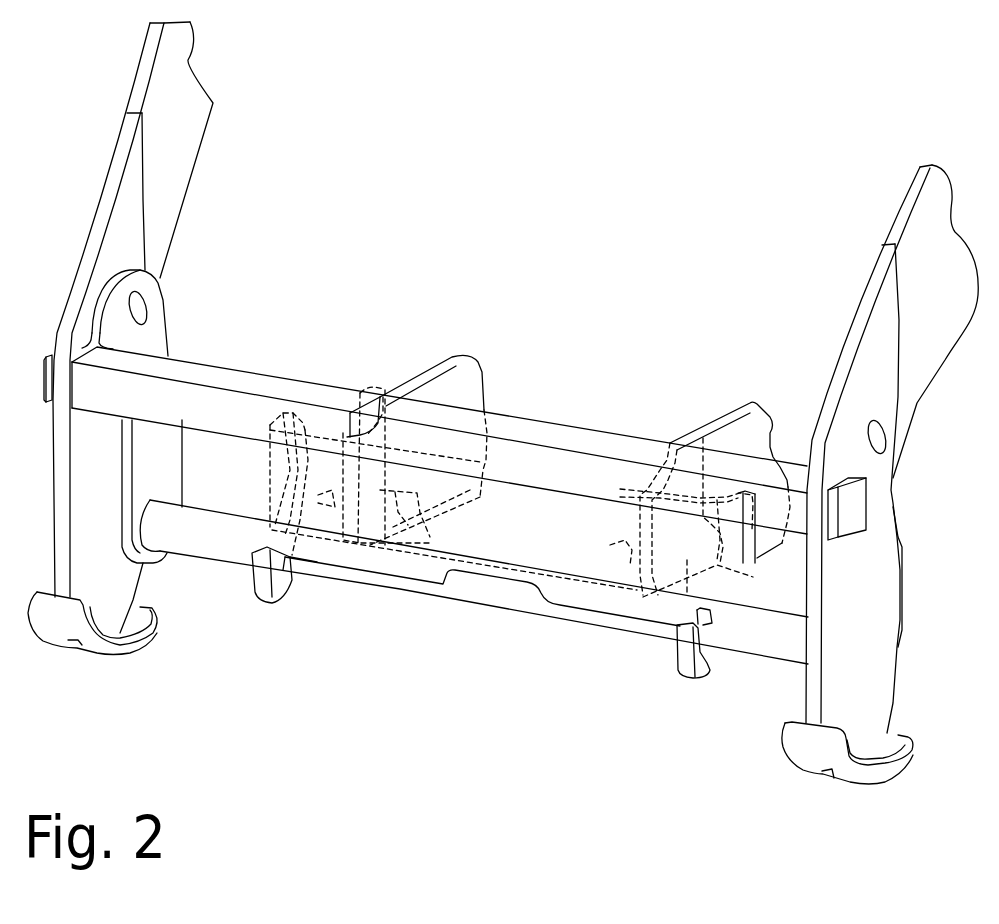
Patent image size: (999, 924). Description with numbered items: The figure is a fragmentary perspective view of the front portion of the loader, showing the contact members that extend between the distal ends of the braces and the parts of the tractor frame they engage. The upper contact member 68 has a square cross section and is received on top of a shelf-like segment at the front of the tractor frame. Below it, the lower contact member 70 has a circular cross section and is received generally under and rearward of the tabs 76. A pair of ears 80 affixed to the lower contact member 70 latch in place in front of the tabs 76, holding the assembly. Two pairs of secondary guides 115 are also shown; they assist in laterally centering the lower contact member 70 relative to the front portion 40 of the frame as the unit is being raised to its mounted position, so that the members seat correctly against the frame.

The front portion 40 is at (463, 380).
The upper contact member 68 is at (205, 360).
The lower contact member 70 is at (207, 552).
The tabs 76 is at (540, 607).
The ears 80 is at (300, 590).
The secondary guides 115 is at (395, 513).